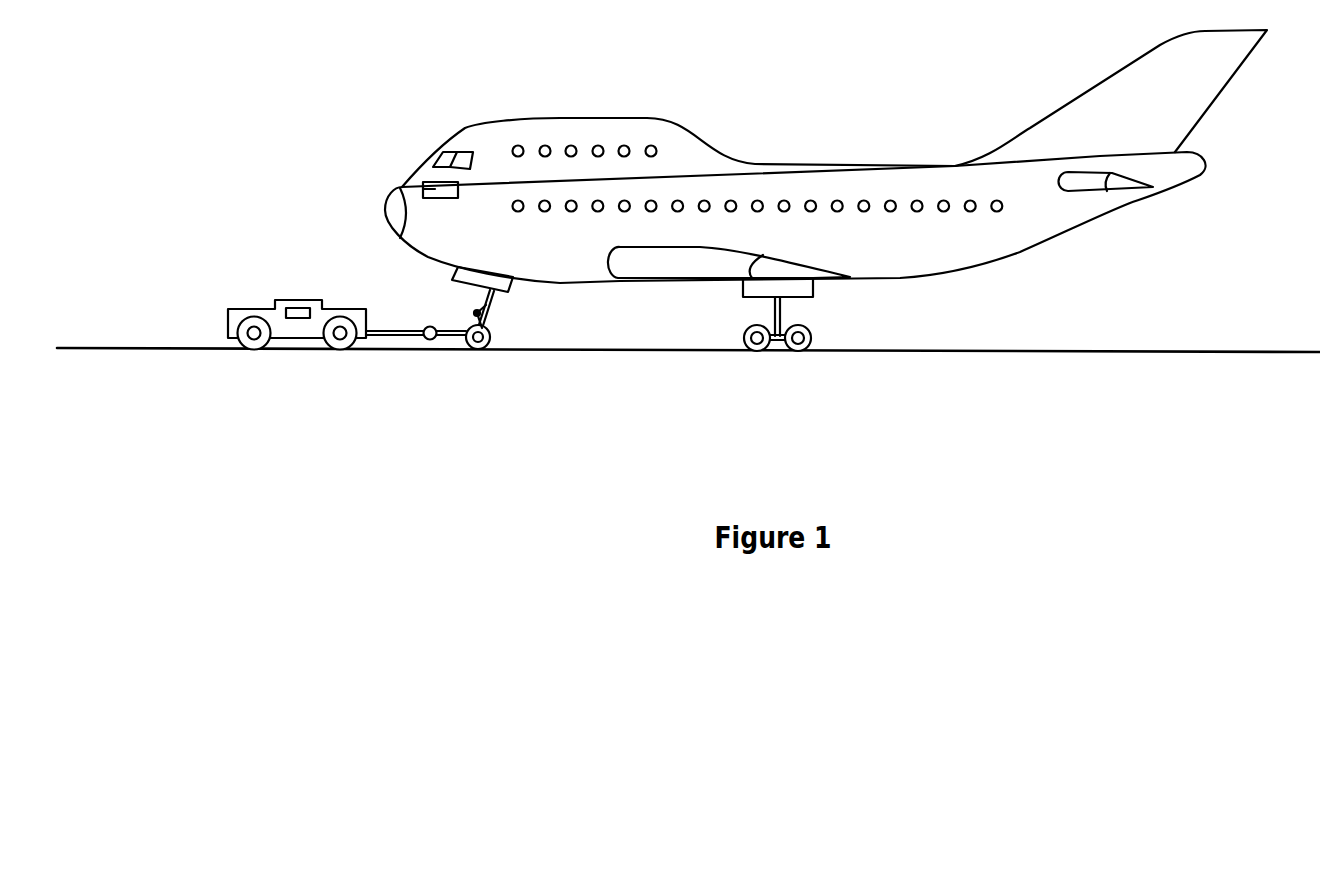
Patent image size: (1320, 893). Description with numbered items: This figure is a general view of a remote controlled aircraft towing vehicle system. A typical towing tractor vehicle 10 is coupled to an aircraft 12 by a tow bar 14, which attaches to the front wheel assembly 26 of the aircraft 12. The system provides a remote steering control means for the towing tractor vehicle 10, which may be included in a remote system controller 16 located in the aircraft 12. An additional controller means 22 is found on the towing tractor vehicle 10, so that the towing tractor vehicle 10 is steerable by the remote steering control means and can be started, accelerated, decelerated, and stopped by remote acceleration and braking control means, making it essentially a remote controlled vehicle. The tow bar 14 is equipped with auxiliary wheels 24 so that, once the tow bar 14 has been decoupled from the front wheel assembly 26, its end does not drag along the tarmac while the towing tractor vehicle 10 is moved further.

The towing tractor vehicle 10 is at (302, 292).
The aircraft 12 is at (692, 158).
The tow bar 14 is at (412, 332).
The remote system controller 16 is at (423, 188).
The controller means 22 is at (300, 318).
The auxiliary wheels 24 is at (432, 341).
The front wheel assembly 26 is at (492, 307).